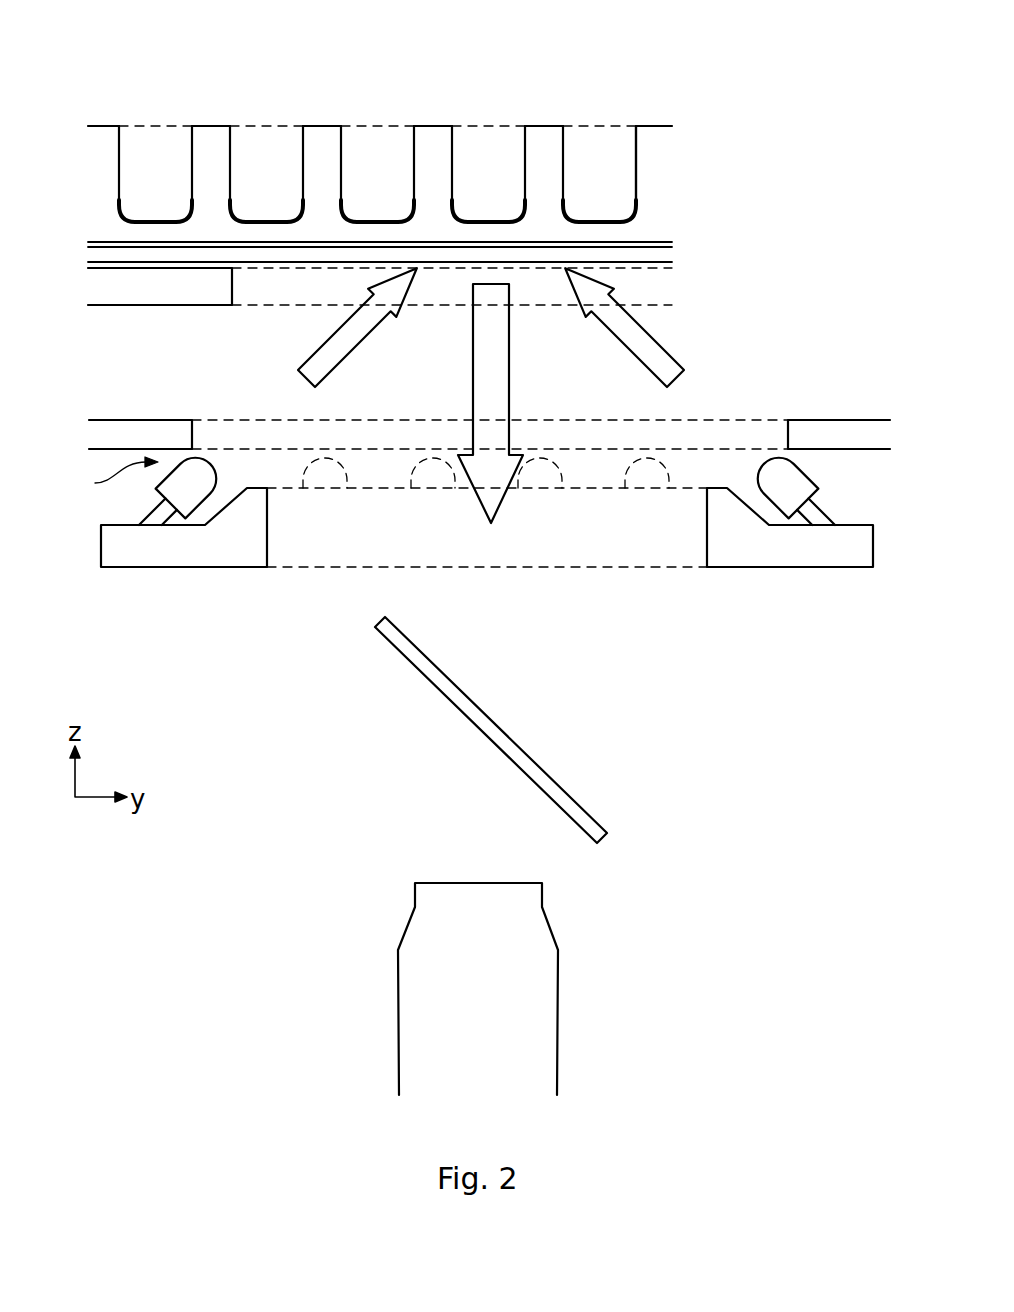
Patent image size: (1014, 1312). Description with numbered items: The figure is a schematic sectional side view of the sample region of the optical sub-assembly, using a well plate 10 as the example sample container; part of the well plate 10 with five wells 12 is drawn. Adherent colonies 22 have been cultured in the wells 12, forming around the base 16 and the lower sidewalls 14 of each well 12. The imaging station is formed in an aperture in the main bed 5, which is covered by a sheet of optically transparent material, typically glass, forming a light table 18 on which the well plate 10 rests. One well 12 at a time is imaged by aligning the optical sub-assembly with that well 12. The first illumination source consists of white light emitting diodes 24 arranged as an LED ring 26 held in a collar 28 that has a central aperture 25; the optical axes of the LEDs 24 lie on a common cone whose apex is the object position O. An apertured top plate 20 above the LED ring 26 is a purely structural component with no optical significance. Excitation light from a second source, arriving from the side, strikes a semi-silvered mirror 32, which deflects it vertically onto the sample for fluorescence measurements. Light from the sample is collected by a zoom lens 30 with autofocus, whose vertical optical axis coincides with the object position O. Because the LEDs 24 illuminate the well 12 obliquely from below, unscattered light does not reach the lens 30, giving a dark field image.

The main bed 5 is at (95, 285).
The well plate 10 is at (102, 177).
The well 12 is at (160, 143).
The lower sidewall 14 is at (637, 162).
The base 16 is at (637, 213).
The light table 18 is at (92, 256).
The apertured top plate 20 is at (127, 428).
The adherent colonies 22 is at (118, 200).
The white light emitting diode 24 is at (802, 467).
The central aperture 25 is at (617, 532).
The LED ring 26 is at (108, 479).
The collar 28 is at (100, 548).
The zoom lens 30 is at (397, 1012).
The semi-silvered mirror 32 is at (490, 742).
The object position O is at (485, 188).